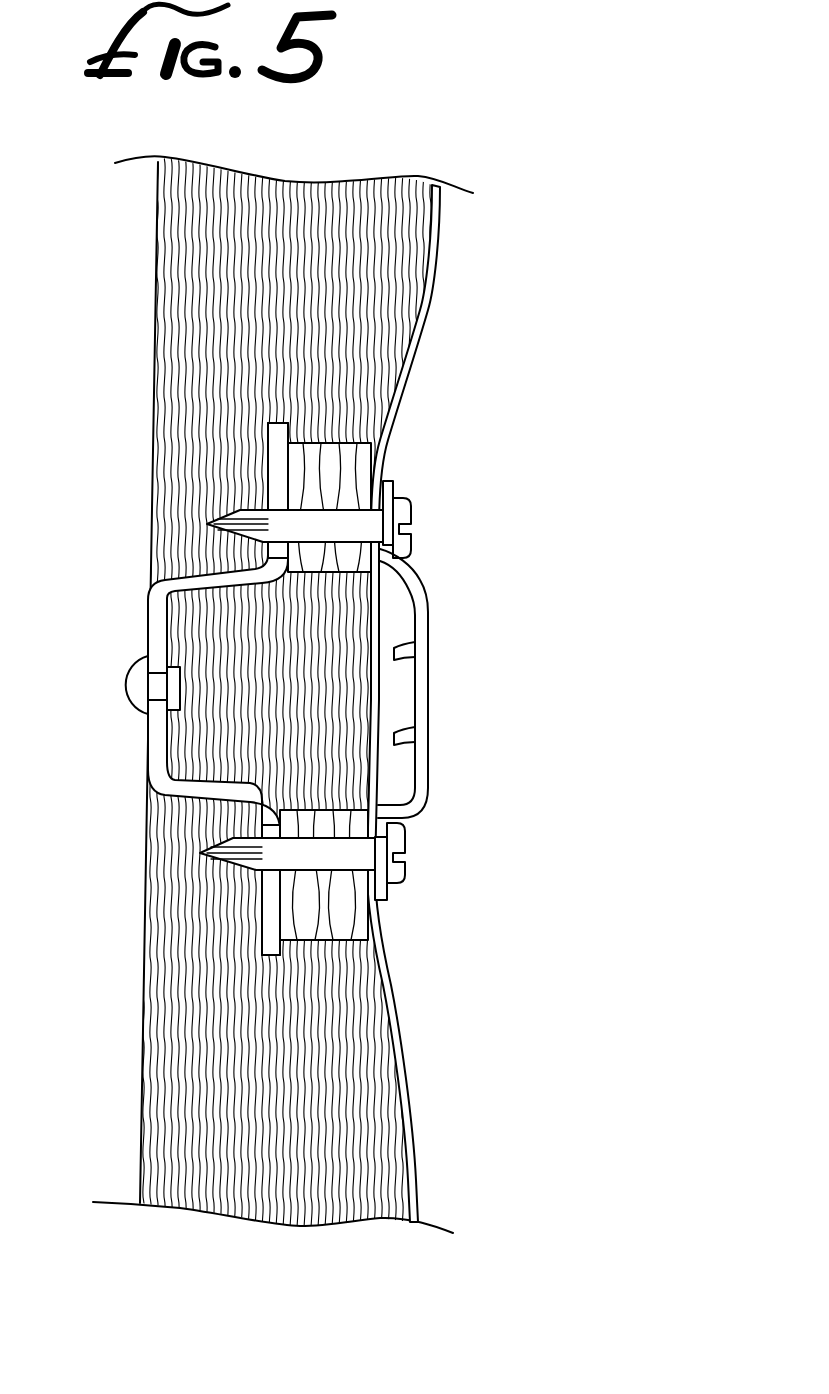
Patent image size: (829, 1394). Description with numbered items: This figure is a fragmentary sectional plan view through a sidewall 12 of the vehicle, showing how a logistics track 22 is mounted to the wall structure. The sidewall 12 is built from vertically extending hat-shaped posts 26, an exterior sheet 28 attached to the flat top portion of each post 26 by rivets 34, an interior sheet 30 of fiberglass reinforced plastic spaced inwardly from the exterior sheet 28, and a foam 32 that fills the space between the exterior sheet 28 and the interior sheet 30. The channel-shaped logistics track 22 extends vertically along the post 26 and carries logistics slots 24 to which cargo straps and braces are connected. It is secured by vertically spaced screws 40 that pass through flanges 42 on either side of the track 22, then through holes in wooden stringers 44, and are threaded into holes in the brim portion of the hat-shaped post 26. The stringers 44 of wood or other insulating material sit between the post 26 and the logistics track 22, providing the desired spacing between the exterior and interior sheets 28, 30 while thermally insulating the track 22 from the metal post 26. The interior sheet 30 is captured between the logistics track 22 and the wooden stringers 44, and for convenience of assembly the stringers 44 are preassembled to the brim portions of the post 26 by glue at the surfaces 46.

The sidewall 12 is at (366, 144).
The logistics track 22 is at (440, 598).
The logistics slots 24 is at (407, 728).
The post 26 is at (166, 806).
The exterior sheet 28 is at (135, 974).
The interior sheet 30 is at (418, 1123).
The foam 32 is at (346, 1198).
The rivets 34 is at (133, 660).
The screws 40 is at (410, 502).
The flanges 42 is at (387, 481).
The stringers 44 is at (343, 422).
The surfaces 46 is at (274, 466).